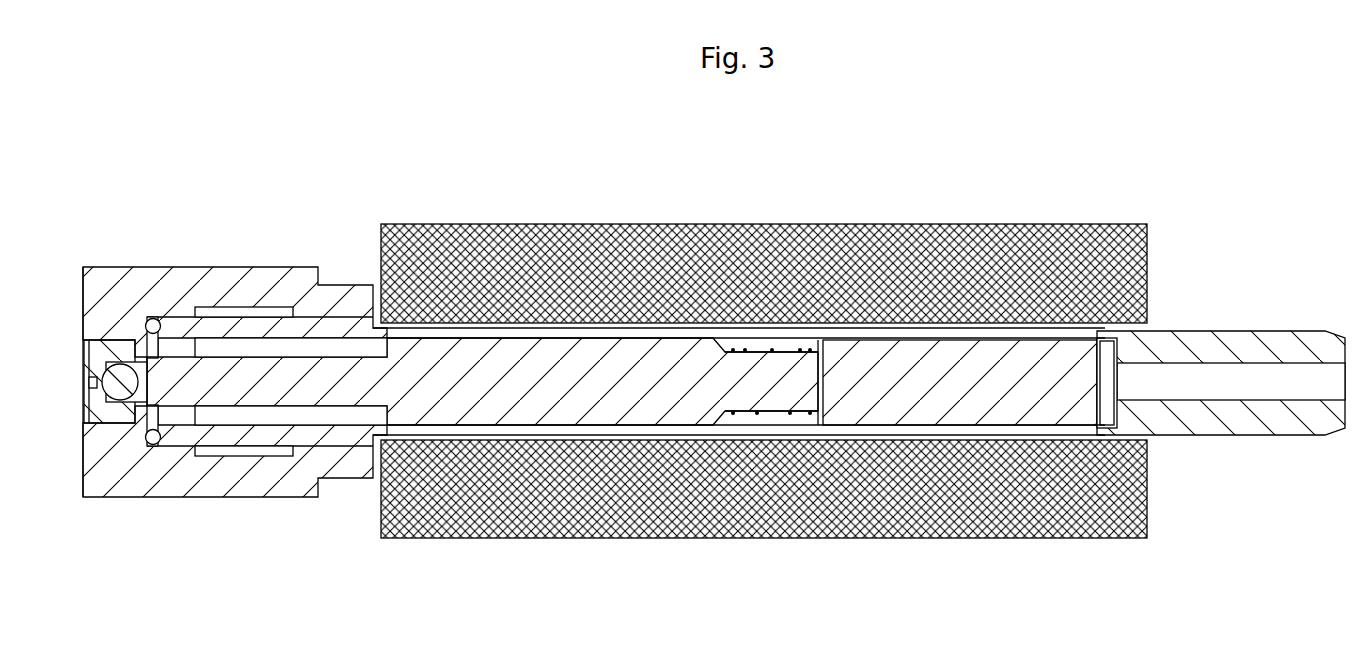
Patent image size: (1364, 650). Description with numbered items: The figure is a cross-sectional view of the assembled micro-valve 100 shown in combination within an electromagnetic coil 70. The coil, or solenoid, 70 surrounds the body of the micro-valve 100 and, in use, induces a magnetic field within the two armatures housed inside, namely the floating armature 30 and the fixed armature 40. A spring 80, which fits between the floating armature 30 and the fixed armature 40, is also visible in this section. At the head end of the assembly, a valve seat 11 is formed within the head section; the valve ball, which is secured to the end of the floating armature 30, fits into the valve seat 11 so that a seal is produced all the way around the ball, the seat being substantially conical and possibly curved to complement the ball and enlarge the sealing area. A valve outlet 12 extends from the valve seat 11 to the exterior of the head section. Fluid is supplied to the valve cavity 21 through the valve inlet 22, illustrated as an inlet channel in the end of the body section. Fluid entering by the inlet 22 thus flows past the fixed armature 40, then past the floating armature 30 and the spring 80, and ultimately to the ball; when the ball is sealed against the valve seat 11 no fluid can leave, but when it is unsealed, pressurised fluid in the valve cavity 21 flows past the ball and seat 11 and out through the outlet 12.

The micro-valve 100 is at (220, 204).
The valve seat 11 is at (110, 393).
The valve outlet 12 is at (98, 372).
The valve cavity 21 is at (302, 420).
The valve inlet 22 is at (1215, 387).
The floating armature 30 is at (371, 353).
The fixed armature 40 is at (932, 422).
The electromagnetic coil 70 is at (720, 223).
The spring 80 is at (772, 350).